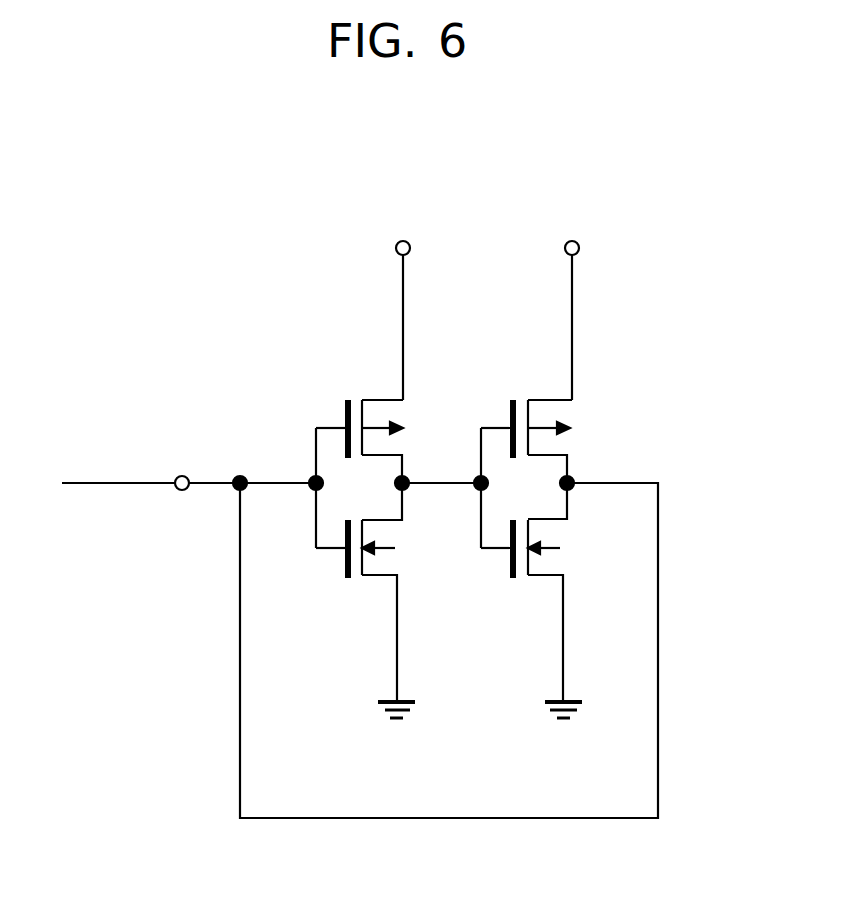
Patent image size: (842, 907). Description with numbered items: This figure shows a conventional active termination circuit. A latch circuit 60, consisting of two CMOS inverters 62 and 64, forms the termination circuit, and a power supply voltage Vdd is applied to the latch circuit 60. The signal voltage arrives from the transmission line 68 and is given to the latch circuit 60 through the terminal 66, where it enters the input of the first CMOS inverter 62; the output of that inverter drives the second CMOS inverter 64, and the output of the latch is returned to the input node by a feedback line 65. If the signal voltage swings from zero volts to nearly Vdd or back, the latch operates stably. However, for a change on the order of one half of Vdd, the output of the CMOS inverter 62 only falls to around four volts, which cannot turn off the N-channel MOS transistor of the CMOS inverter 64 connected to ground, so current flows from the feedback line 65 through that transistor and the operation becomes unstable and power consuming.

The latch circuit 60 is at (248, 319).
The CMOS inverter 62 is at (388, 496).
The CMOS inverter 64 is at (534, 496).
The feedback line 65 is at (472, 820).
The terminal 66 is at (188, 480).
The transmission line 68 is at (110, 482).